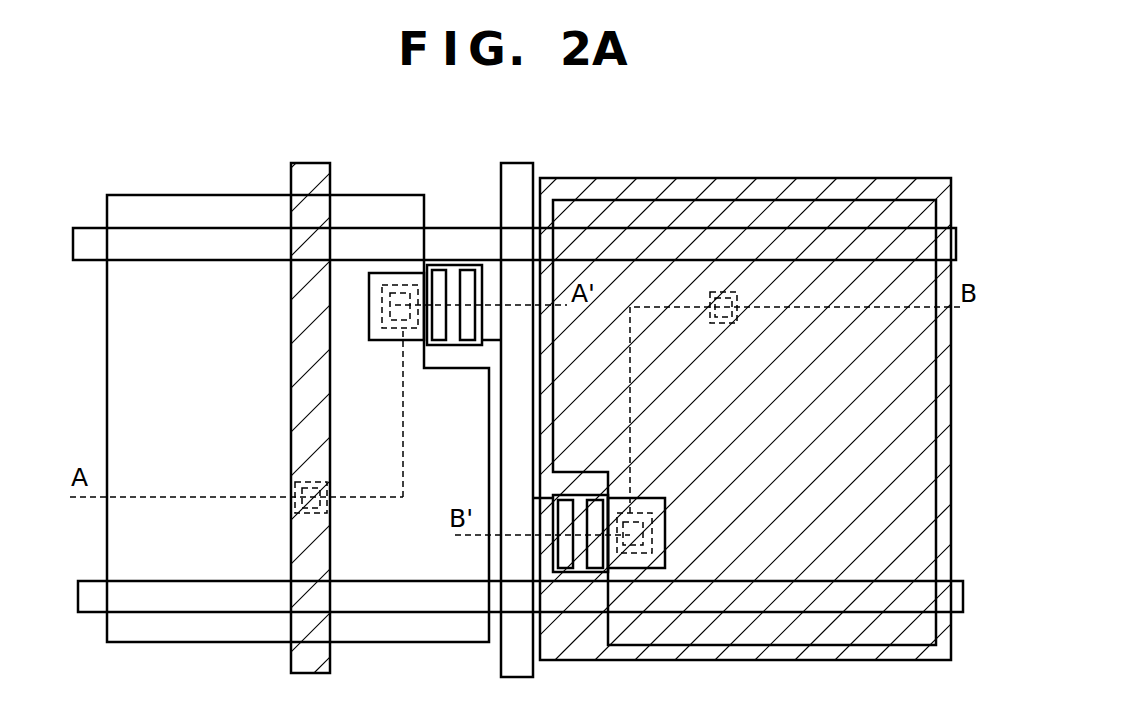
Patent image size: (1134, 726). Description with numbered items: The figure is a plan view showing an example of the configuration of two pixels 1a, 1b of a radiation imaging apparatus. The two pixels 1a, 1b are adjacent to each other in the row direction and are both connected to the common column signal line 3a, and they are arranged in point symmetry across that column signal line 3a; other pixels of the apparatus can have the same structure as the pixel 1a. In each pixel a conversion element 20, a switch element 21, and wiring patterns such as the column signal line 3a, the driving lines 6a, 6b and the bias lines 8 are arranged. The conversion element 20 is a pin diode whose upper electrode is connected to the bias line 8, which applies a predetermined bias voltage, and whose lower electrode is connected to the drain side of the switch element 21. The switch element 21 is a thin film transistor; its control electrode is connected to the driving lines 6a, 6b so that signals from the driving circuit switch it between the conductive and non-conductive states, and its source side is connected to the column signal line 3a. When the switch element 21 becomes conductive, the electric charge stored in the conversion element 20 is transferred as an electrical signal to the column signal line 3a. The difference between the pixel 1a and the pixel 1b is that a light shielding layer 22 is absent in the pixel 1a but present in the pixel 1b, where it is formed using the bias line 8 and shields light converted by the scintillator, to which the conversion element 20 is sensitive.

The pixel 1a is at (358, 148).
The pixel 1b is at (785, 142).
The column signal line 3a is at (500, 173).
The driving line 6a is at (595, 237).
The driving line 6b is at (153, 600).
The bias line 8 is at (290, 172).
The conversion element 20 is at (248, 630).
The switch element 21 is at (455, 277).
The light shielding layer 22 is at (868, 177).